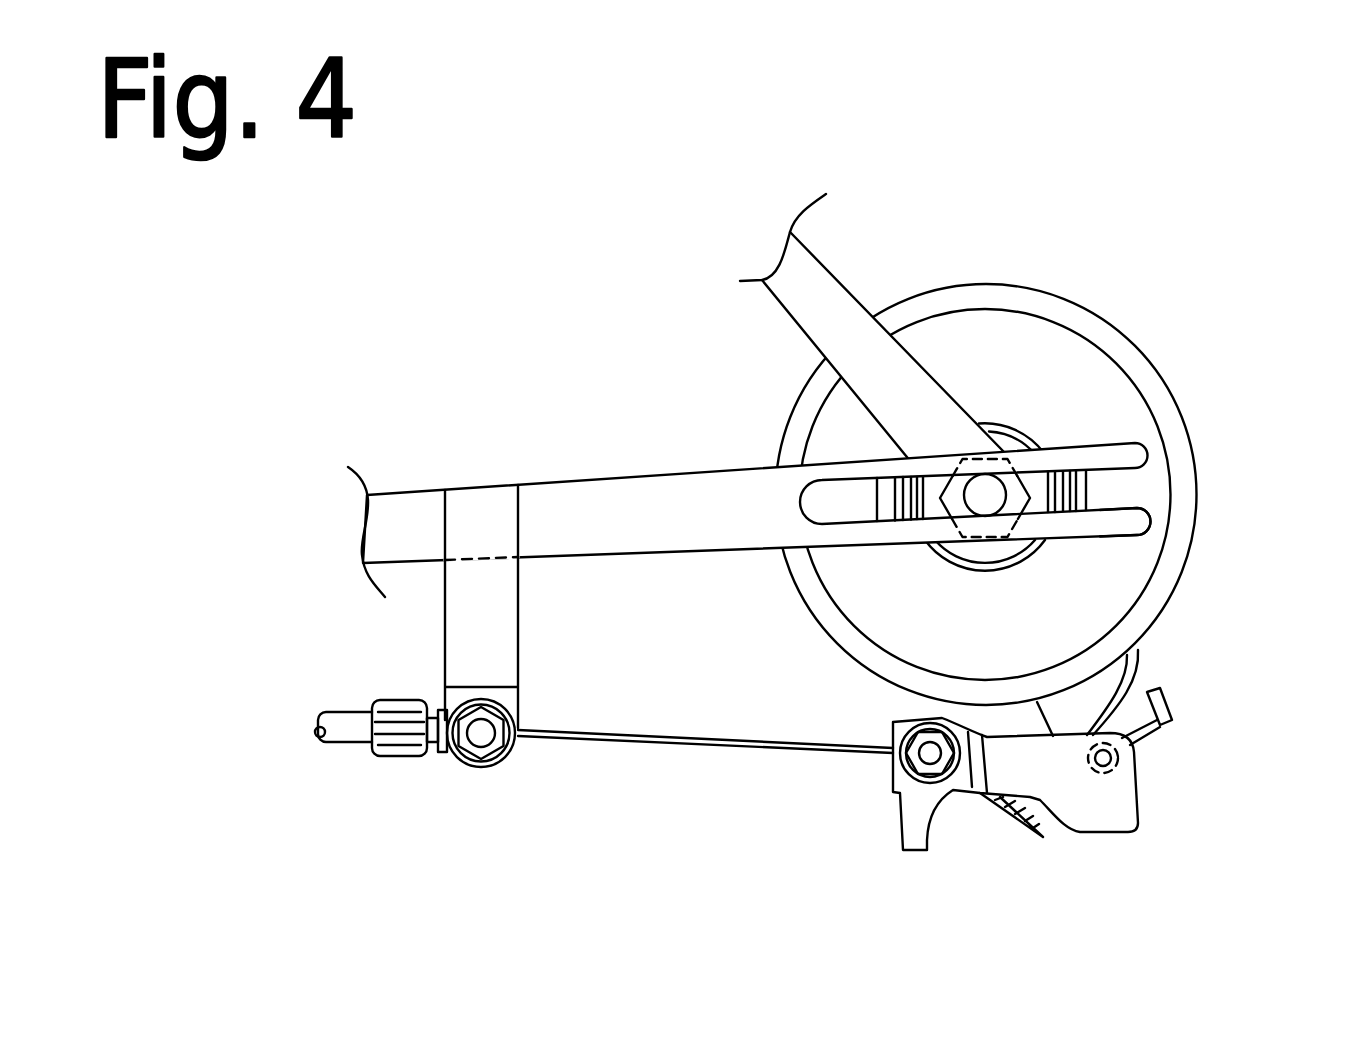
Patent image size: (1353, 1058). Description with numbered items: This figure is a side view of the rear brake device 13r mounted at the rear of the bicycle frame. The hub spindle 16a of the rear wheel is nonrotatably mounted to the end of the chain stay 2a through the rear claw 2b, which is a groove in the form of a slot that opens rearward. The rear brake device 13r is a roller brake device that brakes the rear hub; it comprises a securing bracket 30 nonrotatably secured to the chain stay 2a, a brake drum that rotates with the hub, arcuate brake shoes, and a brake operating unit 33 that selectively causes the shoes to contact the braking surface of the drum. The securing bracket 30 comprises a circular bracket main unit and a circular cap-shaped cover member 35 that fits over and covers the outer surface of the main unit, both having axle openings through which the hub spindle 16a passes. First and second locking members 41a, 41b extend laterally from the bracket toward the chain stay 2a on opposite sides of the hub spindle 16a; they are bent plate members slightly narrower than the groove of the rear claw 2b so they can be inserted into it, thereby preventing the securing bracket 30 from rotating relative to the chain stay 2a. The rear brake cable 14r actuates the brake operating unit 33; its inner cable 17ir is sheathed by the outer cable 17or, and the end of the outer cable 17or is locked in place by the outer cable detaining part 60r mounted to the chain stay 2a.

The chain stay 2a is at (422, 505).
The rear claw 2b is at (1108, 508).
The rear brake device 13r is at (1157, 284).
The rear brake cable 14r is at (347, 720).
The hub spindle 16a is at (993, 497).
The inner cable 17ir is at (614, 742).
The outer cable 17or is at (327, 737).
The securing bracket 30 is at (1062, 318).
The brake operating unit 33 is at (1135, 670).
The cover member 35 is at (1115, 400).
The first locking member 41a is at (890, 503).
The second locking member 41b is at (1084, 503).
The outer cable detaining part 60r is at (400, 752).